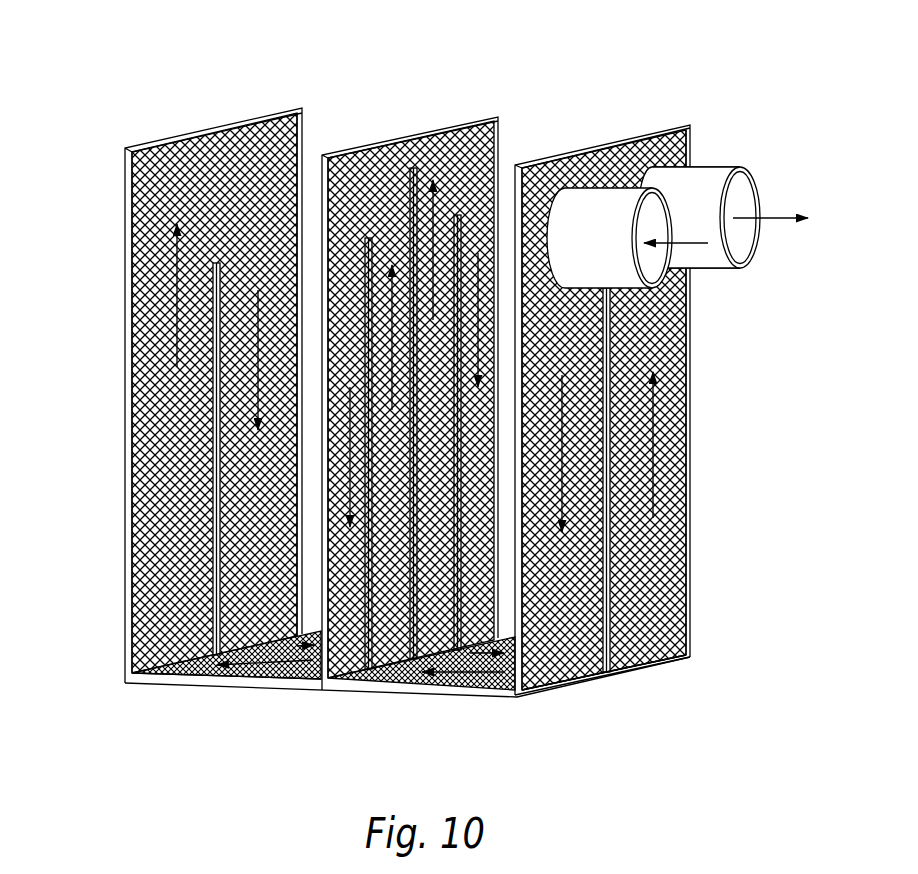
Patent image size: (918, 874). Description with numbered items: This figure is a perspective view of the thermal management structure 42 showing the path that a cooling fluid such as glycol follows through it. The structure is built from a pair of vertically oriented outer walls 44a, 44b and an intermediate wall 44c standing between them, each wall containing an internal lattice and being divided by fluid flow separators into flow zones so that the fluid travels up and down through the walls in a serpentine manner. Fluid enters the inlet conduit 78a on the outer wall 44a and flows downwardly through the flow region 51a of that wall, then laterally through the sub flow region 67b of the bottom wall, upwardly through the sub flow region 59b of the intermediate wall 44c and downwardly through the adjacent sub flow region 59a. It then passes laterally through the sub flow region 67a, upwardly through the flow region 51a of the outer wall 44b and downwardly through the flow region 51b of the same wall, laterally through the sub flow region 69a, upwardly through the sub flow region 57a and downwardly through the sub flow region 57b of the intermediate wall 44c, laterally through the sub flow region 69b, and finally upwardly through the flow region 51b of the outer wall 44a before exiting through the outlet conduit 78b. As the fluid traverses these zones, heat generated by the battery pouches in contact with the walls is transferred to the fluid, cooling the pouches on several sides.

The thermal management structure 42 is at (424, 398).
The outer wall 44a is at (709, 610).
The outer wall 44b is at (421, 406).
The intermediate wall 44c is at (508, 124).
The flow region 51a is at (180, 486).
The flow region 51b is at (421, 414).
The sub flow region 57a is at (437, 368).
The sub flow region 57b is at (477, 230).
The sub flow region 59a is at (349, 636).
The sub flow region 59b is at (388, 624).
The sub flow region 67a is at (171, 685).
The sub flow region 67b is at (582, 660).
The sub flow region 69a is at (313, 667).
The sub flow region 69b is at (667, 642).
The inlet conduit 78a is at (592, 205).
The outlet conduit 78b is at (713, 182).